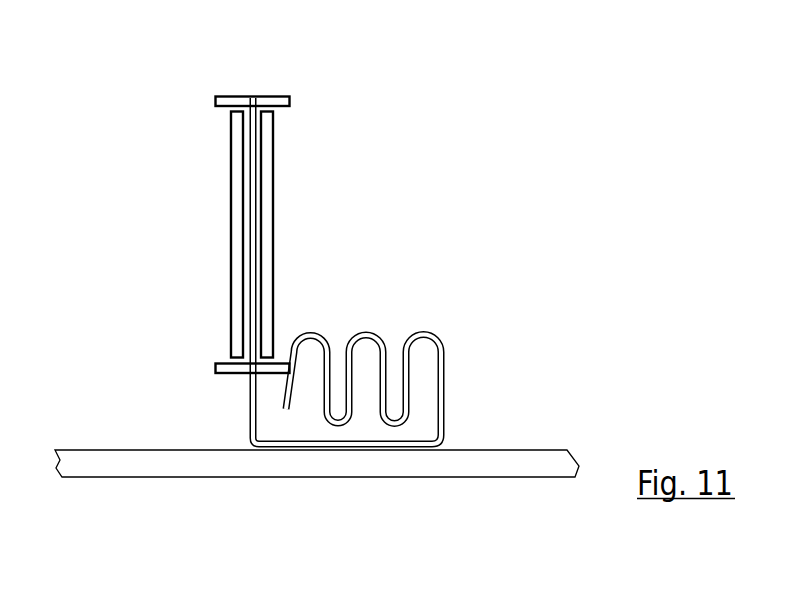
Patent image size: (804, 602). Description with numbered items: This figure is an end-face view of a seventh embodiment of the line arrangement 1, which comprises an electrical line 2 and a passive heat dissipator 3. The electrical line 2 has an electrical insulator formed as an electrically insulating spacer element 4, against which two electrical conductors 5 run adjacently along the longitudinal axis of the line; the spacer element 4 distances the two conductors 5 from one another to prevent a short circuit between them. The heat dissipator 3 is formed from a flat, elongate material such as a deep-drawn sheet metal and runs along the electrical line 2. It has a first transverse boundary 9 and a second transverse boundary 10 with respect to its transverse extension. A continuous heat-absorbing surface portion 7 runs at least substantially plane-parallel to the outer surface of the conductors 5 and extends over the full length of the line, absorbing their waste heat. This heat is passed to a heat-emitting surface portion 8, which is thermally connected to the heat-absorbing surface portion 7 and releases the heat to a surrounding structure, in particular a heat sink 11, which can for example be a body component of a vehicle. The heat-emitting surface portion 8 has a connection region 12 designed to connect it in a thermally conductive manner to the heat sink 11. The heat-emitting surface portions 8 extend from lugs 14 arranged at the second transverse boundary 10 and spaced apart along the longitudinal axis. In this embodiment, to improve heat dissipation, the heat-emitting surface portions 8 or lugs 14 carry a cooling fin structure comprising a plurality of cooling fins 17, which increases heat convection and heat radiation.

The line arrangement 1 is at (300, 277).
The electrical line 2 is at (244, 59).
The passive heat dissipator 3 is at (351, 277).
The electrically insulating spacer element 4 is at (227, 100).
The electrical conductors 5 is at (249, 240).
The heat-absorbing surface portion 7 is at (230, 108).
The heat-emitting surface portion 8 is at (349, 320).
The first transverse boundary 9 is at (386, 277).
The second transverse boundary 10 is at (284, 412).
The heat sink 11 is at (85, 458).
The connection region 12 is at (388, 320).
The lugs 14 is at (251, 423).
The cooling fins 17 is at (347, 320).